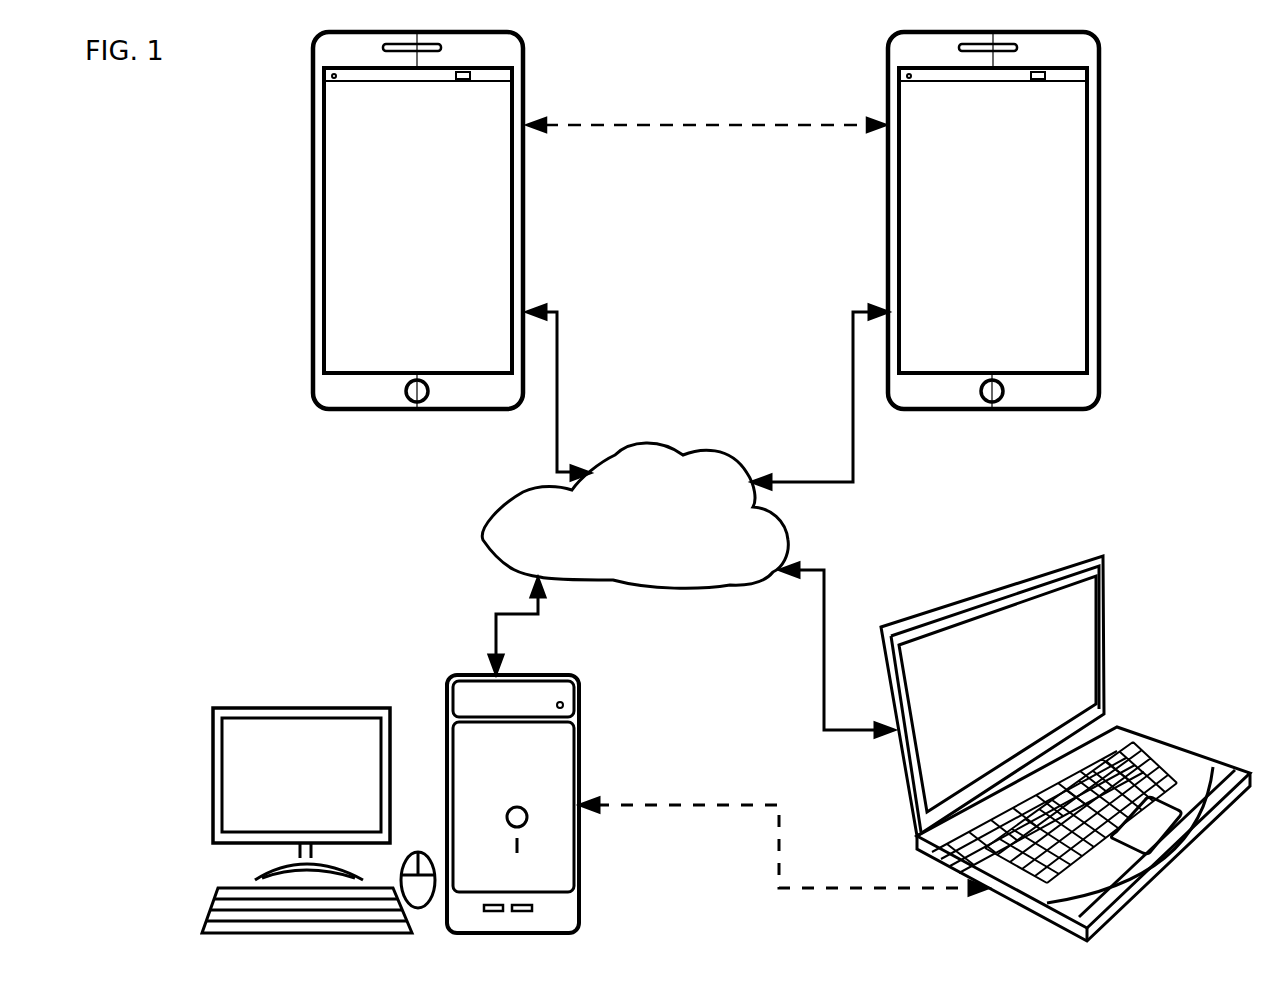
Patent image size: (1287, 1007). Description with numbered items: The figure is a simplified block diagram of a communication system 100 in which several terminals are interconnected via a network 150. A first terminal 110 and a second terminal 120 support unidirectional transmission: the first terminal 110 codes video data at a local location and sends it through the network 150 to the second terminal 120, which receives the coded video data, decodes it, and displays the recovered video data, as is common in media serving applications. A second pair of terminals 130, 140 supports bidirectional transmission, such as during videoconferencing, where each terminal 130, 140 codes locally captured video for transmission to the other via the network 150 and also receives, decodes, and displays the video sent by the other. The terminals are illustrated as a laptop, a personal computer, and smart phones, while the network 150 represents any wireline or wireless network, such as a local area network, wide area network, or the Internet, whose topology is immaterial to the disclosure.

The communication system 100 is at (233, 104).
The first terminal 110 is at (1104, 615).
The second terminal 120 is at (580, 887).
The terminal 130 is at (312, 155).
The terminal 140 is at (887, 155).
The network 150 is at (618, 474).